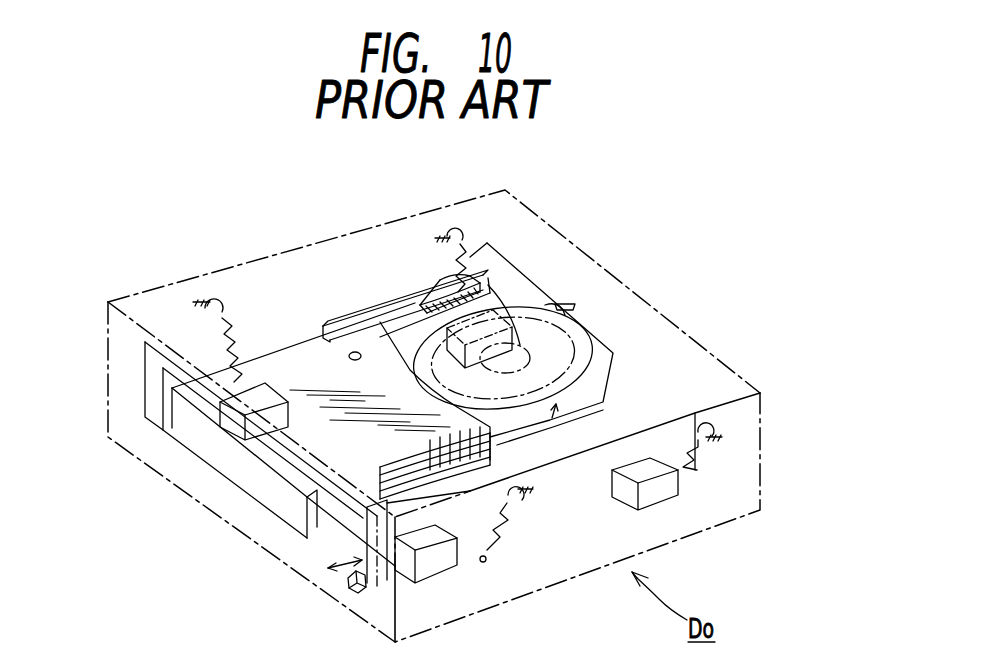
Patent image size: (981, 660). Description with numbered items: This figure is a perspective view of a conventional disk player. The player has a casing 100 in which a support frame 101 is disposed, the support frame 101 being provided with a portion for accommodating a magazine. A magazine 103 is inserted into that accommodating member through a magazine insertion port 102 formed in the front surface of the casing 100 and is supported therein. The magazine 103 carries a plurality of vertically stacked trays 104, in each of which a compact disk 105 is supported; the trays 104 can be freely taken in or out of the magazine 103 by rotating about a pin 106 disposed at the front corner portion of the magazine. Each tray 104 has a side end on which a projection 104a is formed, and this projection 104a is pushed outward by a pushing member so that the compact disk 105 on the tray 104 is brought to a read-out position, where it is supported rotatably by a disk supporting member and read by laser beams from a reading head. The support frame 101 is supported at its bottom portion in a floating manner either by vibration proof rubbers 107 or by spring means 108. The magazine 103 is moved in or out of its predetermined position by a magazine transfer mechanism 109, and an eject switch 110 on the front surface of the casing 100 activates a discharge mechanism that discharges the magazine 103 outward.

The casing 100 is at (702, 346).
The support frame 101 is at (638, 350).
The magazine insertion port 102 is at (307, 540).
The magazine 103 is at (288, 363).
The tray 104 is at (598, 380).
The projection 104a is at (560, 298).
The compact disk 105 is at (573, 317).
The pin 106 is at (353, 351).
The vibration proof rubber 107 is at (157, 298).
The spring means 108 is at (233, 317).
The magazine transfer mechanism 109 is at (401, 316).
The eject switch 110 is at (347, 597).